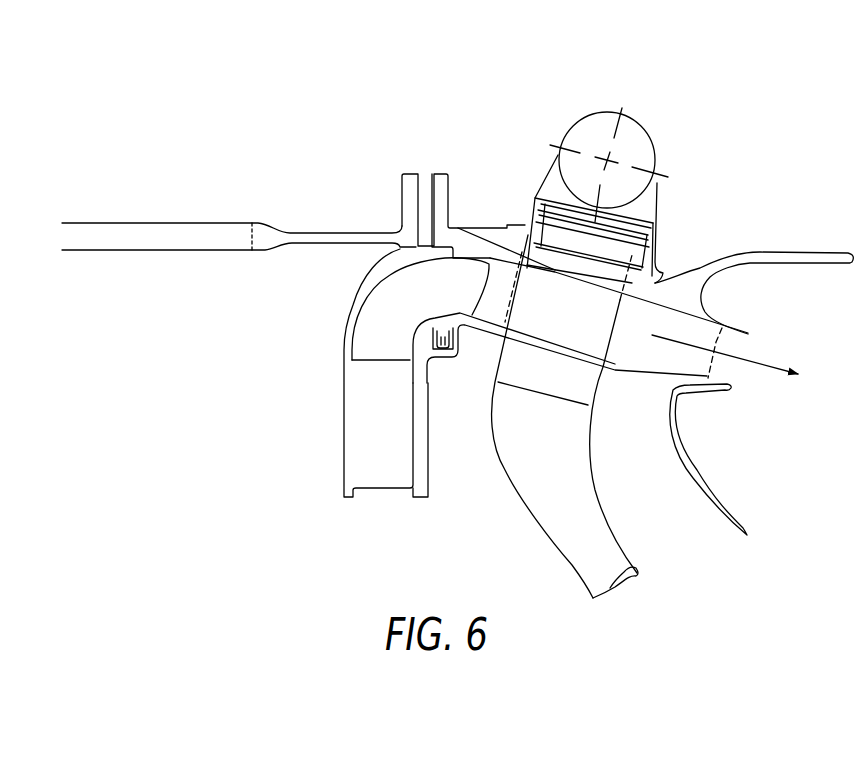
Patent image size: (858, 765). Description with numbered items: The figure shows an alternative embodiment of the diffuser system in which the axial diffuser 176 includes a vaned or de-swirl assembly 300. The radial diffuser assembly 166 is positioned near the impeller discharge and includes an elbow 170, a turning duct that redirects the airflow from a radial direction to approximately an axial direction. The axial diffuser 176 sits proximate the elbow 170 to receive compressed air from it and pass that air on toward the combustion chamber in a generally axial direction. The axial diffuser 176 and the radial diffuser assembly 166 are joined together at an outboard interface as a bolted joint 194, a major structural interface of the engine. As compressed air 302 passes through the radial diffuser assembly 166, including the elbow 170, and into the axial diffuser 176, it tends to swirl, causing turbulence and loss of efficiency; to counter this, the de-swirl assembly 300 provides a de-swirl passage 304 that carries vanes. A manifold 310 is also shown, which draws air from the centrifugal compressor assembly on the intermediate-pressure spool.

The radial diffuser assembly 166 is at (316, 399).
The elbow 170 is at (358, 293).
The axial diffuser 176 is at (674, 253).
The bolted joint 194 is at (381, 175).
The de-swirl assembly 300 is at (697, 208).
The compressed air 302 is at (770, 362).
The de-swirl passage 304 is at (613, 405).
The manifold 310 is at (625, 114).